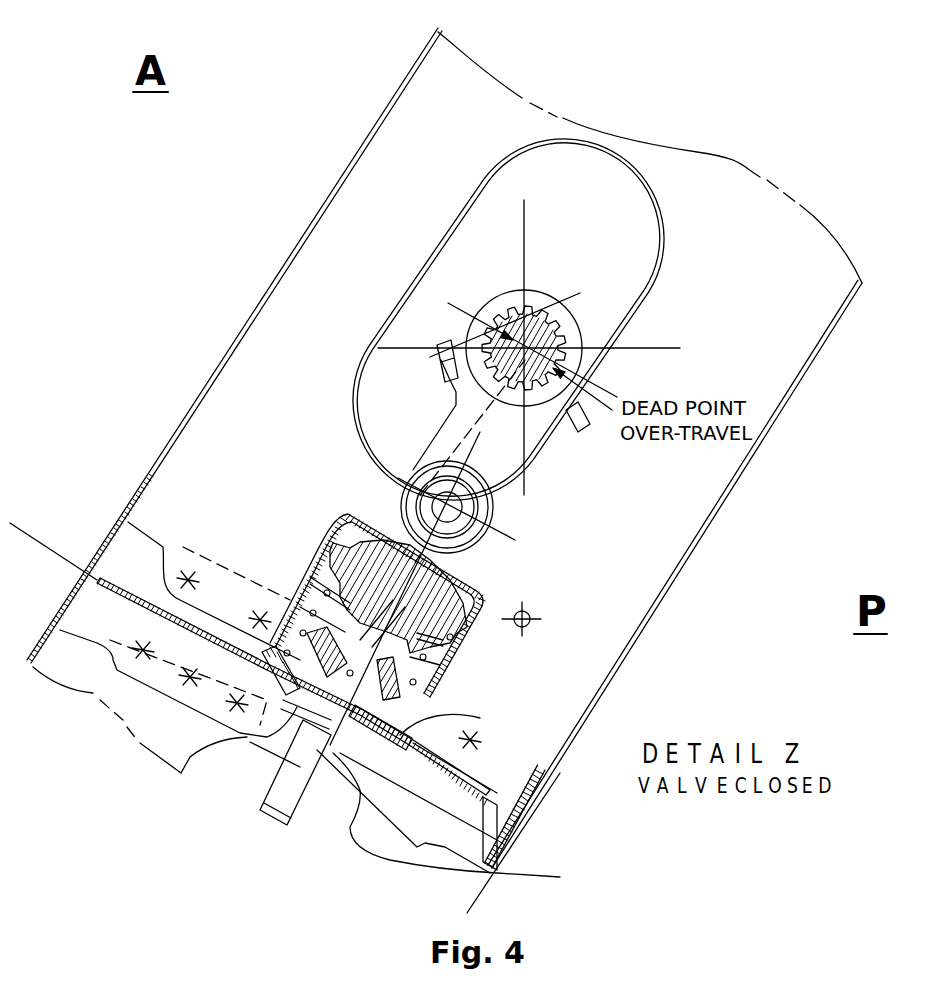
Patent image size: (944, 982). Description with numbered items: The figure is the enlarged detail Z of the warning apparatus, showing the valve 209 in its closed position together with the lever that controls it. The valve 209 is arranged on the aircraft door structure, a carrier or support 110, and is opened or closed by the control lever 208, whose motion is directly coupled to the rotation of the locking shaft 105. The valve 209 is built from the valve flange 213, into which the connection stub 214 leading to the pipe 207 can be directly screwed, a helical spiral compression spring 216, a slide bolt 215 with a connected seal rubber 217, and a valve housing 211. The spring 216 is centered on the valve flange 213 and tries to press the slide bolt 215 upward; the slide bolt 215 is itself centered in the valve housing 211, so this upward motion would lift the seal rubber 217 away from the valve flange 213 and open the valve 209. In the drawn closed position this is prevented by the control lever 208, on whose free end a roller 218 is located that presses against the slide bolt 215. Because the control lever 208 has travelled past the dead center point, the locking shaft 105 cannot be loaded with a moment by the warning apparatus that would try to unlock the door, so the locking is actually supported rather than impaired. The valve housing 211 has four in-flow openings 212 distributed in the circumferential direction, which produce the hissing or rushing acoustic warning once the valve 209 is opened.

The locking shaft 105 is at (503, 312).
The slide bolt 215 is at (380, 493).
The valve 209 is at (321, 502).
The helical spiral compression spring 216 is at (262, 548).
The seal rubber 217 is at (297, 610).
The control lever 208 is at (588, 356).
The roller 218 is at (485, 523).
The valve housing 211 is at (490, 597).
The in-flow openings 212 is at (468, 678).
The valve flange 213 is at (477, 717).
The carrier or support 110 is at (512, 768).
The pipe 207 is at (263, 787).
The connection stub 214 is at (497, 873).